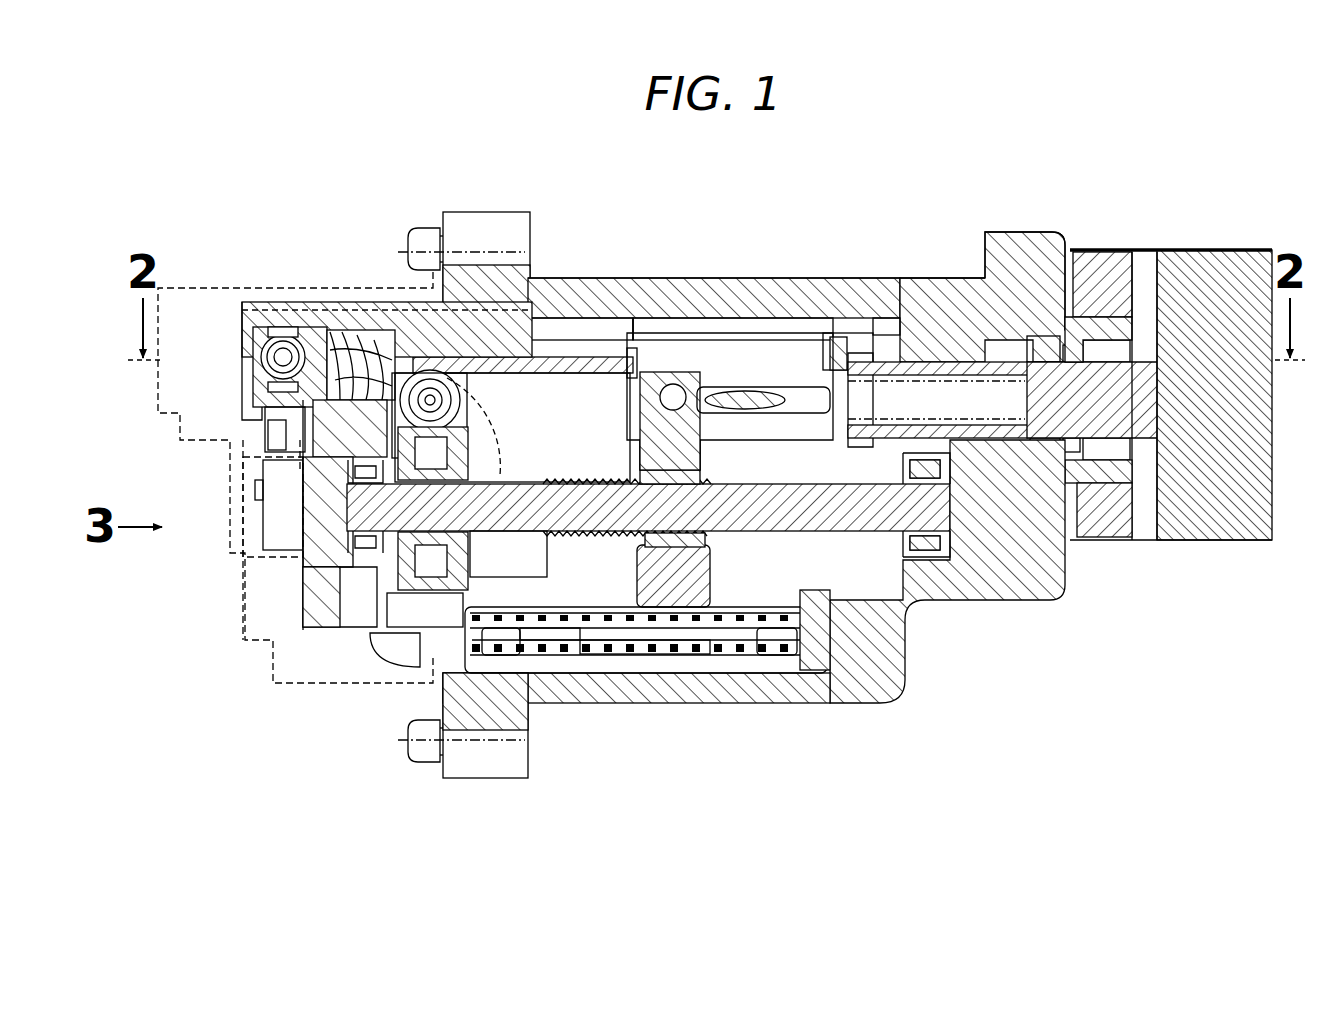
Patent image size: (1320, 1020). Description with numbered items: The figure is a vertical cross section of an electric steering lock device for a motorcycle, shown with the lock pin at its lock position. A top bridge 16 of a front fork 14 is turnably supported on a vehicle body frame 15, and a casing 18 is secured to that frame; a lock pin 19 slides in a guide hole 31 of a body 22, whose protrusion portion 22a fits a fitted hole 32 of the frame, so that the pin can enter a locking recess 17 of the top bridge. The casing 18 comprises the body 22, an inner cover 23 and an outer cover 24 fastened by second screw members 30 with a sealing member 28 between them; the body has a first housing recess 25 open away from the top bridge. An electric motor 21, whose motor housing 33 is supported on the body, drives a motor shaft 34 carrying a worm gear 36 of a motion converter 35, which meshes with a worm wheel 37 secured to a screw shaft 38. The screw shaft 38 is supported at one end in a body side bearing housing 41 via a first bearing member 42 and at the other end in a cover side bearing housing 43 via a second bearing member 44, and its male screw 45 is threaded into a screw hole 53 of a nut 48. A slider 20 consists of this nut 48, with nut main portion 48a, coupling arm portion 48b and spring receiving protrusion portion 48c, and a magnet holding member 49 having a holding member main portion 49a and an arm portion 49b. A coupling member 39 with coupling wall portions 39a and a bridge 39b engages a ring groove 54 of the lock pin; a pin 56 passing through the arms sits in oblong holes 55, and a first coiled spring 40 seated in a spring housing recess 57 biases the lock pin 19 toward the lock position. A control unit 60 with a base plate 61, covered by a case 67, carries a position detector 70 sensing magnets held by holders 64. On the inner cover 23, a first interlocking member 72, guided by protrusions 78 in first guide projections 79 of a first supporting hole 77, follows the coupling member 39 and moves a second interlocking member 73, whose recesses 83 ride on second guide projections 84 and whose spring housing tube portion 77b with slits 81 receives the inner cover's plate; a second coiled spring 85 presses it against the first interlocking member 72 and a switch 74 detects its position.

The front fork 14 is at (1243, 246).
The vehicle body frame 15 is at (1092, 260).
The top bridge 16 is at (1180, 270).
The locking recess 17 is at (1250, 442).
The casing 18 is at (603, 274).
The lock pin 19 is at (1245, 407).
The slider 20 is at (626, 410).
The electric motor 21 is at (342, 350).
The body 22 is at (738, 288).
The protrusion portion 22a is at (1146, 275).
The inner cover 23 is at (392, 305).
The outer cover 24 is at (202, 288).
The first housing recess 25 is at (788, 325).
The sealing member 28 is at (420, 728).
The second screw member 30 is at (424, 230).
The guide hole 31 is at (995, 300).
The fitted hole 32 is at (1120, 540).
The motor housing 33 is at (343, 380).
The motor shaft 34 is at (458, 406).
The motion converter 35 is at (330, 595).
The worm gear 36 is at (521, 331).
The worm wheel 37 is at (360, 622).
The screw shaft 38 is at (812, 517).
The coupling member 39 is at (826, 332).
The coupling wall portion 39a is at (664, 320).
The bridge 39b is at (878, 335).
The first coiled spring 40 is at (947, 571).
The body side bearing housing 41 is at (950, 548).
The first bearing member 42 is at (915, 560).
The cover side bearing housing 43 is at (362, 530).
The second bearing member 44 is at (415, 565).
The male screw 45 is at (545, 548).
The nut 48 is at (683, 374).
The nut main portion 48a is at (700, 455).
The coupling arm portion 48b is at (690, 385).
The spring receiving protrusion portion 48c is at (778, 412).
The magnet holding member 49 is at (607, 617).
The holding member main portion 49a is at (680, 644).
The arm portion 49b is at (635, 355).
The screw hole 53 is at (650, 480).
The ring groove 54 is at (900, 330).
The oblong hole 55 is at (855, 425).
The pin 56 is at (581, 326).
The spring housing recess 57 is at (958, 368).
The control unit 60 is at (735, 656).
The base plate 61 is at (615, 652).
The holder 64 is at (810, 652).
The case 67 is at (405, 652).
The position detector 70 is at (672, 596).
The first interlocking member 72 is at (478, 300).
The second interlocking member 73 is at (262, 350).
The switch 74 is at (278, 545).
The first supporting hole 77 is at (361, 365).
The rotor end 77b is at (262, 430).
The protrusion 78 is at (546, 356).
The first guide projection 79 is at (350, 428).
The slit 81 is at (282, 330).
The recess 83 is at (279, 505).
The second guide projection 84 is at (266, 388).
The second coiled spring 85 is at (266, 333).